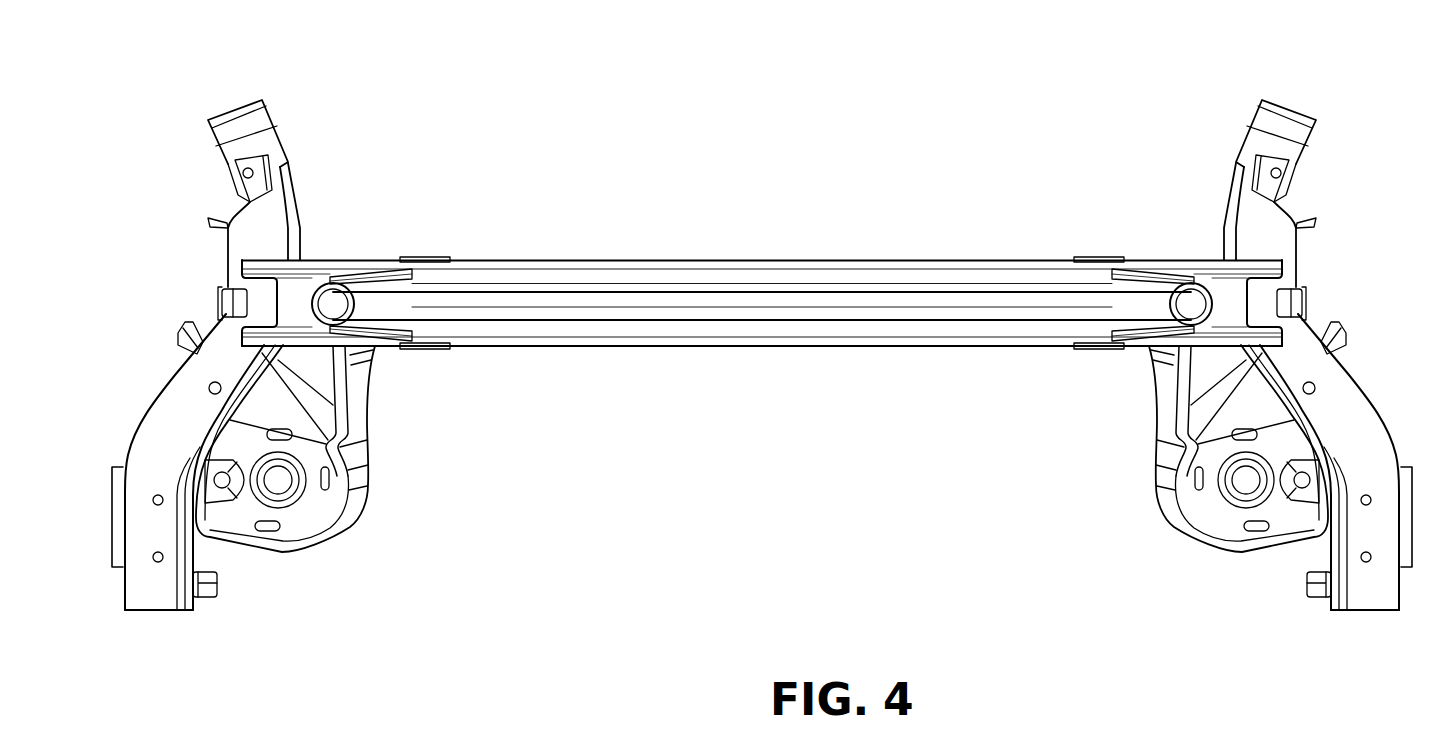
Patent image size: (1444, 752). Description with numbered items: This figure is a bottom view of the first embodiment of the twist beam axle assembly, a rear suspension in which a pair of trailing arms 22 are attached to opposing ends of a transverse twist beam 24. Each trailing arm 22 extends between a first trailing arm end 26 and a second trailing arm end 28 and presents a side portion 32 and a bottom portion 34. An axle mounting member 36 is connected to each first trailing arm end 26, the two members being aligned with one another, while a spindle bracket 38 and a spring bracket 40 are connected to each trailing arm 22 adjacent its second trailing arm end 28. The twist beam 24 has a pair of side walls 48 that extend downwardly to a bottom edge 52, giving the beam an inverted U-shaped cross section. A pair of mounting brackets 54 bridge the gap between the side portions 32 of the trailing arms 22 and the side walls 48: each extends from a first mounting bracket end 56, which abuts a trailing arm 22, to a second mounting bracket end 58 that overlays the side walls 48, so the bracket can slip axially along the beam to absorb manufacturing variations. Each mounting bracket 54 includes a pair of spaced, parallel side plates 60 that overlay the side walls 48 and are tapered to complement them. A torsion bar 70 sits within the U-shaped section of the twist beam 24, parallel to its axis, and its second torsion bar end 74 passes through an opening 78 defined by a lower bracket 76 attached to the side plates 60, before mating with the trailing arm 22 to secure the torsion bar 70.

The trailing arm 22 is at (143, 417).
The twist beam 24 is at (695, 258).
The first trailing arm end 26 is at (238, 157).
The second trailing arm end 28 is at (145, 612).
The side portion 32 is at (282, 352).
The bottom portion 34 is at (222, 360).
The axle mounting member 36 is at (260, 122).
The spindle bracket 38 is at (113, 568).
The spring bracket 40 is at (273, 553).
The side wall 48 is at (998, 259).
The bottom edge 52 is at (795, 259).
The mounting bracket 54 is at (440, 258).
The first mounting bracket end 56 is at (242, 262).
The second mounting bracket end 58 is at (447, 353).
The side plate 60 is at (390, 268).
The torsion bar 70 is at (480, 293).
The second torsion bar end 74 is at (1210, 280).
The lower bracket 76 is at (303, 278).
The opening 78 is at (333, 290).